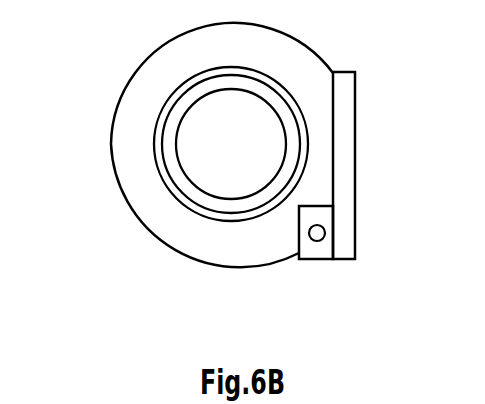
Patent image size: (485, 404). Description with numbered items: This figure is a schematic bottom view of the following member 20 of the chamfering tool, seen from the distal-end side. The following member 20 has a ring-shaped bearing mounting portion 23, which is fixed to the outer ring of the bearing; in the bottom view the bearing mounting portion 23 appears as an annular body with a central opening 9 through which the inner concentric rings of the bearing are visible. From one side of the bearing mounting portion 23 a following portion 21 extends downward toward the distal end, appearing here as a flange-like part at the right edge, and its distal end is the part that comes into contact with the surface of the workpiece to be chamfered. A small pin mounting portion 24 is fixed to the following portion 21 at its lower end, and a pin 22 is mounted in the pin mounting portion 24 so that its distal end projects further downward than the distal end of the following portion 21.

The following member 20 is at (228, 176).
The bearing mounting portion 23 is at (292, 43).
The following portion 21 is at (347, 133).
The pin mounting portion 24 is at (305, 218).
The pin 22 is at (317, 241).
The inlet opening 9 is at (185, 175).